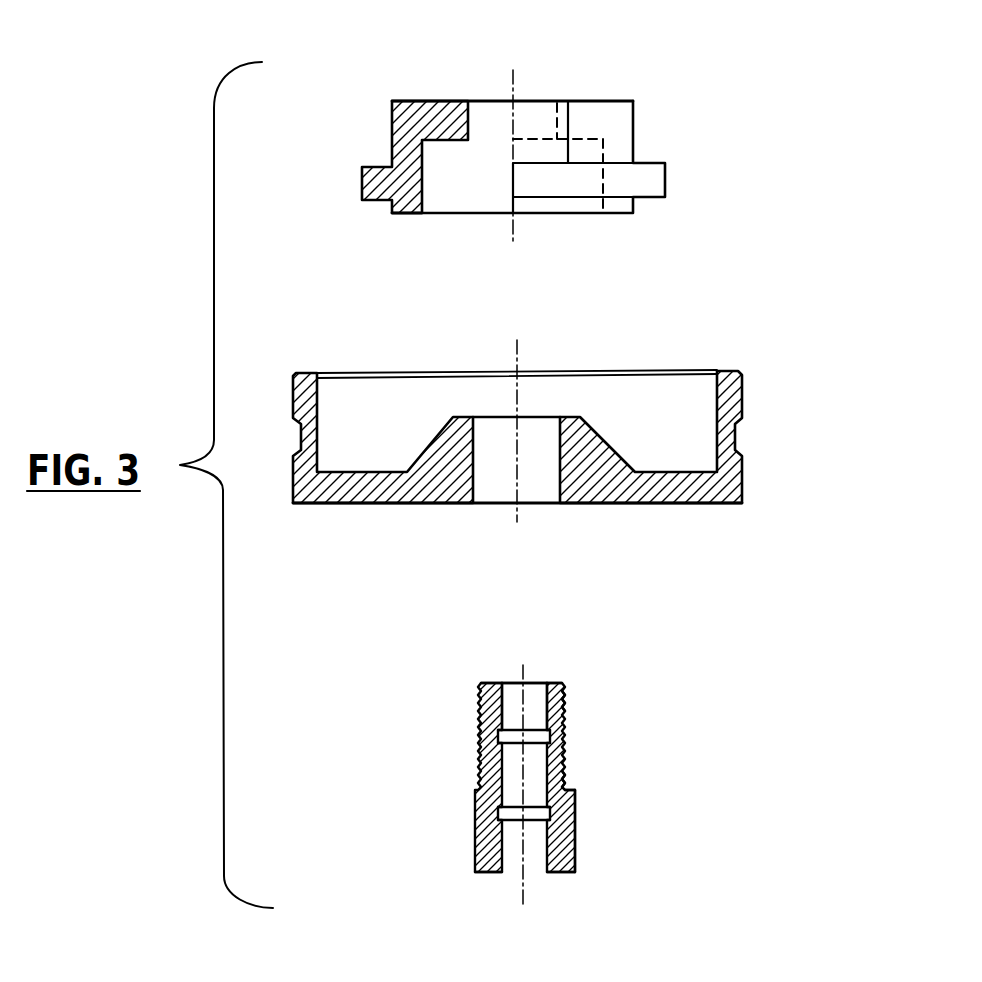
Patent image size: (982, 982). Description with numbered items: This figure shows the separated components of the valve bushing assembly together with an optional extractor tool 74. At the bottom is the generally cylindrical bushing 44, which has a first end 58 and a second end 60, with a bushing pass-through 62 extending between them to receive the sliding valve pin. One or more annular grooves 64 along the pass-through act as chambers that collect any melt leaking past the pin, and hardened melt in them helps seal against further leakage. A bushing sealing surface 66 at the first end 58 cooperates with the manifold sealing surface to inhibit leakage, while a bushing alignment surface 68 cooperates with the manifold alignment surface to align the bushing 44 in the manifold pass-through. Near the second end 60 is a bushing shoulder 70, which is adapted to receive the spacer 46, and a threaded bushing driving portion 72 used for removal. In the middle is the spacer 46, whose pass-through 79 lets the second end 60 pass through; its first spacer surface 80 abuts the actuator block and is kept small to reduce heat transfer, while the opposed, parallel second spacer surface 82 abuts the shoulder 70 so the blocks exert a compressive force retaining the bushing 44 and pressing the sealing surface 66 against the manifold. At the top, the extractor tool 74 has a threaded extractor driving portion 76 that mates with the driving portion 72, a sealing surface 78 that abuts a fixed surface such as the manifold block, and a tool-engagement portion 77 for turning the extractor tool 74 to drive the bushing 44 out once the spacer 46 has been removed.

The spacer 46 is at (746, 369).
The extractor tool 74 is at (616, 87).
The extractor driving portion 76 is at (478, 100).
The tool-engagement portion 77 is at (603, 128).
The sealing surface 78 is at (400, 214).
The pass-through 79 is at (488, 420).
The first spacer surface 80 is at (721, 370).
The second spacer surface 82 is at (652, 504).
The first end 58 is at (486, 876).
The second end 60 is at (557, 683).
The bushing pass-through 62 is at (535, 682).
The annular grooves 64 is at (512, 732).
The bushing driving portion 72 is at (566, 705).
The bushing shoulder 70 is at (569, 788).
The bushing alignment surface 68 is at (576, 812).
The bushing 44 is at (576, 840).
The bushing sealing surface 66 is at (568, 873).